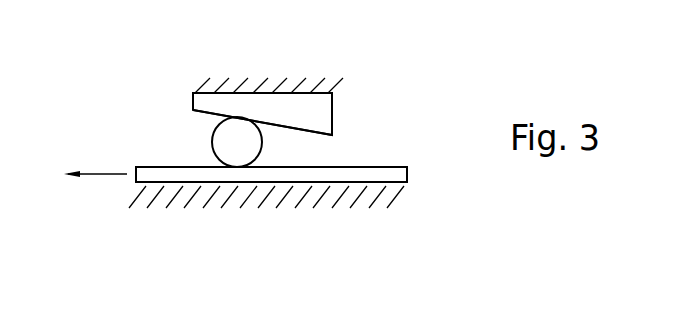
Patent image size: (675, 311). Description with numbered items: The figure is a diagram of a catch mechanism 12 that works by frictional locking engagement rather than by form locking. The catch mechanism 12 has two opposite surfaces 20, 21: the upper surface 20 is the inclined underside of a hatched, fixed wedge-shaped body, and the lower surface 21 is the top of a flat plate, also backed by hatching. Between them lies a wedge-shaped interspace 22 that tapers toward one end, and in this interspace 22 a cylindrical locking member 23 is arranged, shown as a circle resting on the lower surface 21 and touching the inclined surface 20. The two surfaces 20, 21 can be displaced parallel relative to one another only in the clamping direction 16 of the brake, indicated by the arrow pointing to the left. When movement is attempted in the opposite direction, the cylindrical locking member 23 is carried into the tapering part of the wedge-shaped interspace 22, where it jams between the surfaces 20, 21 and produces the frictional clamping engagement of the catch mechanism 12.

The catch mechanism 12 is at (174, 97).
The clamping direction 16 is at (107, 170).
The surface 20 is at (313, 136).
The surface 21 is at (381, 164).
The wedge-shaped interspace 22 is at (285, 142).
The cylindrical locking member 23 is at (237, 148).